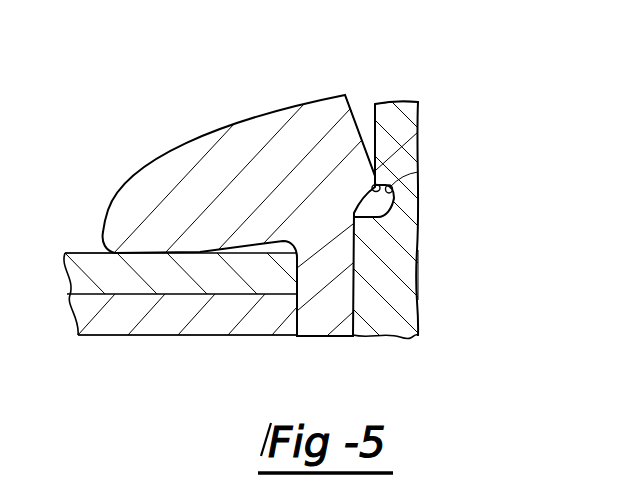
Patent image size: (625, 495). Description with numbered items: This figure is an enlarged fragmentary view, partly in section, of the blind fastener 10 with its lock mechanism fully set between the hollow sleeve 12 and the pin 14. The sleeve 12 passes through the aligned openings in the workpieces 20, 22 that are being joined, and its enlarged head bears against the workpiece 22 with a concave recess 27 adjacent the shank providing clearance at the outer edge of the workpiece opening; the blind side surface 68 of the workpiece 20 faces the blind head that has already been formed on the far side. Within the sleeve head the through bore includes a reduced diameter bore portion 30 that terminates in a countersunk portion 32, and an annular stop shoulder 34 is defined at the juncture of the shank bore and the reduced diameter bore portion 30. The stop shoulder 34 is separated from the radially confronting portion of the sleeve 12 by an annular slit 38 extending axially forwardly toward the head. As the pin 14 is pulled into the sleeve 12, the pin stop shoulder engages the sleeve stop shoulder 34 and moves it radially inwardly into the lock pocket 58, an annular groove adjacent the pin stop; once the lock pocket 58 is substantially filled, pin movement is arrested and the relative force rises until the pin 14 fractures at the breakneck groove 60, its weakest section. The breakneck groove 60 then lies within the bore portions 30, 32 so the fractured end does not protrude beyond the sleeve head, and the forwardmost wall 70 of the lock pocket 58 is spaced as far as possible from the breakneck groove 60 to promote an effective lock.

The blind fastener 10 is at (427, 275).
The hollow sleeve 12 is at (329, 323).
The pin 14 is at (403, 257).
The workpiece 20 is at (152, 323).
The workpiece 22 is at (85, 262).
The concave recess 27 is at (272, 246).
The reduced diameter bore portion 30 is at (418, 133).
The countersunk portion 32 is at (349, 105).
The annular stop shoulder 34 is at (374, 203).
The annular slit 38 is at (353, 207).
The lock pocket 58 is at (418, 172).
The breakneck groove 60 is at (400, 102).
The blind side surface 68 is at (188, 336).
The forwardmost wall 70 is at (373, 186).